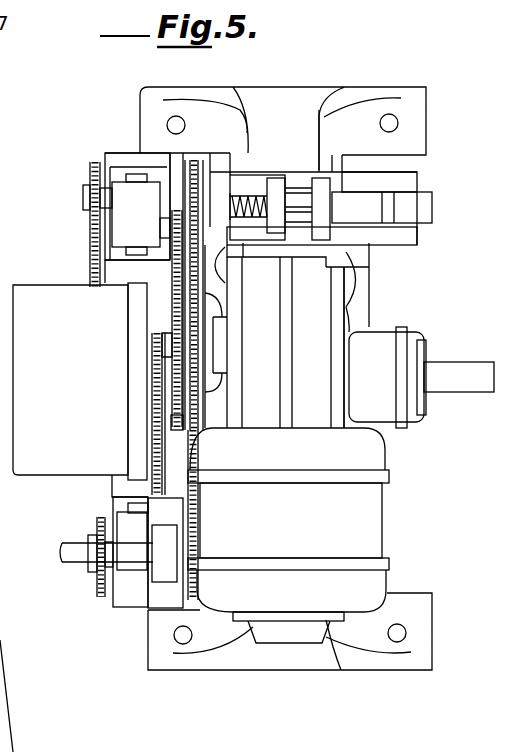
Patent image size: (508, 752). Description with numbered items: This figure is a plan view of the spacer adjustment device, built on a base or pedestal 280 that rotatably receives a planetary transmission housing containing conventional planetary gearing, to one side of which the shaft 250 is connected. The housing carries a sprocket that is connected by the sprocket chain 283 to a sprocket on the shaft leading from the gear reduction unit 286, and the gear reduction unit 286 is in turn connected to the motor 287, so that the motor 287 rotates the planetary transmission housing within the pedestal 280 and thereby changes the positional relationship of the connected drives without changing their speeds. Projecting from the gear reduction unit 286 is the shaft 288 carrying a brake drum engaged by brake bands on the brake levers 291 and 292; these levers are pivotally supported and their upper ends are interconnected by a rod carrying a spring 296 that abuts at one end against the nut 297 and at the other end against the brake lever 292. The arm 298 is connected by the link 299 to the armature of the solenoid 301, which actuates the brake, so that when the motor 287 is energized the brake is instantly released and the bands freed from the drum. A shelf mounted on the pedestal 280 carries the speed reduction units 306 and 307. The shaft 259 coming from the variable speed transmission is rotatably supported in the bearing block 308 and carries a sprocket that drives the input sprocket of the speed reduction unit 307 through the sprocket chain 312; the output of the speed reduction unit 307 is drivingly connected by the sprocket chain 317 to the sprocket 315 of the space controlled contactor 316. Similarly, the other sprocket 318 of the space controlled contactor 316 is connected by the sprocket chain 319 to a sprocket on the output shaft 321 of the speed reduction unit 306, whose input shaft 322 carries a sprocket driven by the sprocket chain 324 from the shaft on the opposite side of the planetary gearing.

The shaft 250 is at (449, 387).
The shaft 259 is at (77, 542).
The base or pedestal 280 is at (155, 655).
The sprocket chain 283 is at (208, 425).
The gear reduction unit 286 is at (265, 358).
The motor 287 is at (382, 503).
The shaft 288 is at (291, 250).
The brake lever 291 is at (321, 178).
The brake lever 292 is at (274, 182).
The spring 296 is at (252, 195).
The nut 297 is at (222, 168).
The arm 298 is at (424, 197).
The link 299 is at (387, 212).
The solenoid 301 is at (389, 240).
The speed reduction unit 306 is at (119, 186).
The speed reduction unit 307 is at (127, 522).
The bearing block 308 is at (165, 573).
The sprocket chain 312 is at (97, 595).
The sprocket 315 is at (155, 355).
The space controlled contactor 316 is at (65, 273).
The sprocket chain 317 is at (113, 483).
The sprocket 318 is at (178, 428).
The sprocket chain 319 is at (175, 268).
The output shaft 321 is at (167, 227).
The input shaft 322 is at (85, 193).
The sprocket chain 324 is at (95, 263).